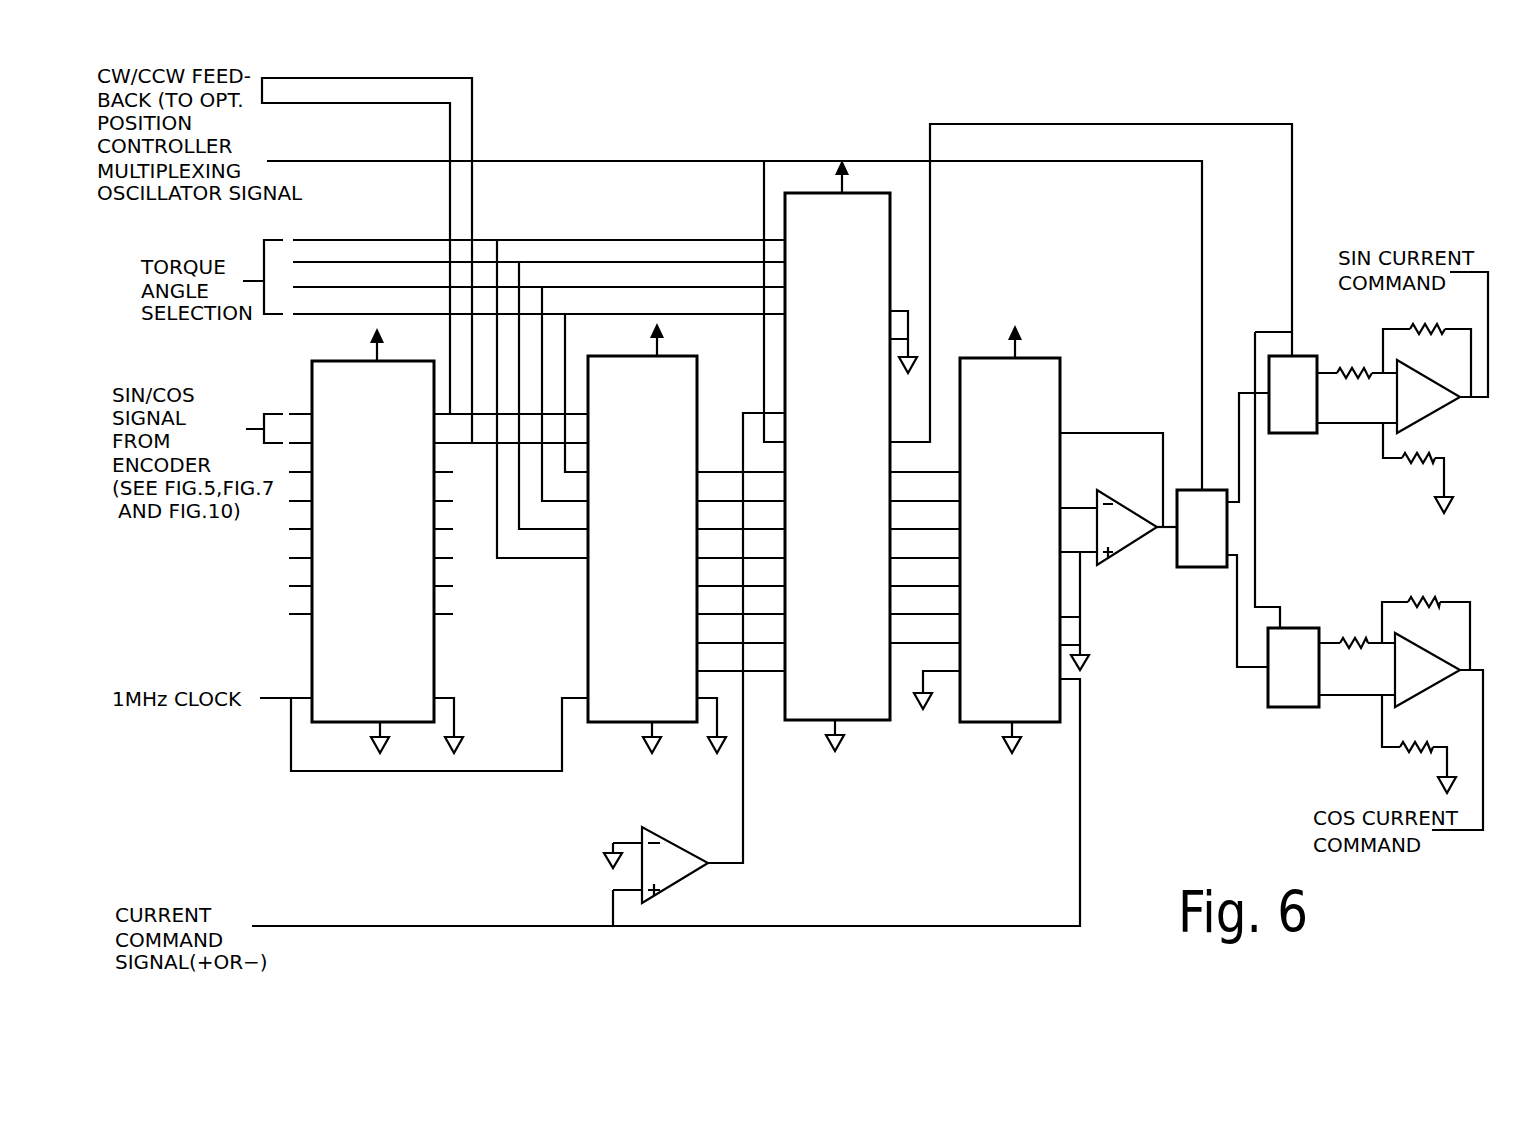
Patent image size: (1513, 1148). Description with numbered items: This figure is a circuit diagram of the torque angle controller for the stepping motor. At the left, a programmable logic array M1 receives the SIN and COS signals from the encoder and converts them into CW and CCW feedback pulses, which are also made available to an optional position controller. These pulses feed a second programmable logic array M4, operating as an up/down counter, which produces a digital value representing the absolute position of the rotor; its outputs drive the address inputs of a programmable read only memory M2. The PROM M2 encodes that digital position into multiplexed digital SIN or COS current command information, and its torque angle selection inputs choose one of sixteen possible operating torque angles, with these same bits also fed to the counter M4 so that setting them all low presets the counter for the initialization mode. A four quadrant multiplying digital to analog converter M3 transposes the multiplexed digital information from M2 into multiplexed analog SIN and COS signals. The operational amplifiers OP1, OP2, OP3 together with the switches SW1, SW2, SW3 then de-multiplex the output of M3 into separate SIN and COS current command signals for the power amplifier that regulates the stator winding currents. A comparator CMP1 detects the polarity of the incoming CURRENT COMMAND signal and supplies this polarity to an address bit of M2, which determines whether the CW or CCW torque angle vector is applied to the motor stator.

The programmable logic array M1 is at (373, 541).
The programmable read only memory M2 is at (837, 456).
The four quadrant multiplying digital to analog converter M3 is at (1010, 540).
The programmable logic array M4 is at (642, 539).
The operational amplifier OP1 is at (1127, 527).
The operational amplifier OP2 is at (1428, 396).
The operational amplifier OP3 is at (1427, 670).
The switch SW1 is at (1202, 542).
The switch SW2 is at (1293, 406).
The switch SW3 is at (1293, 680).
The comparator CMP1 is at (675, 865).